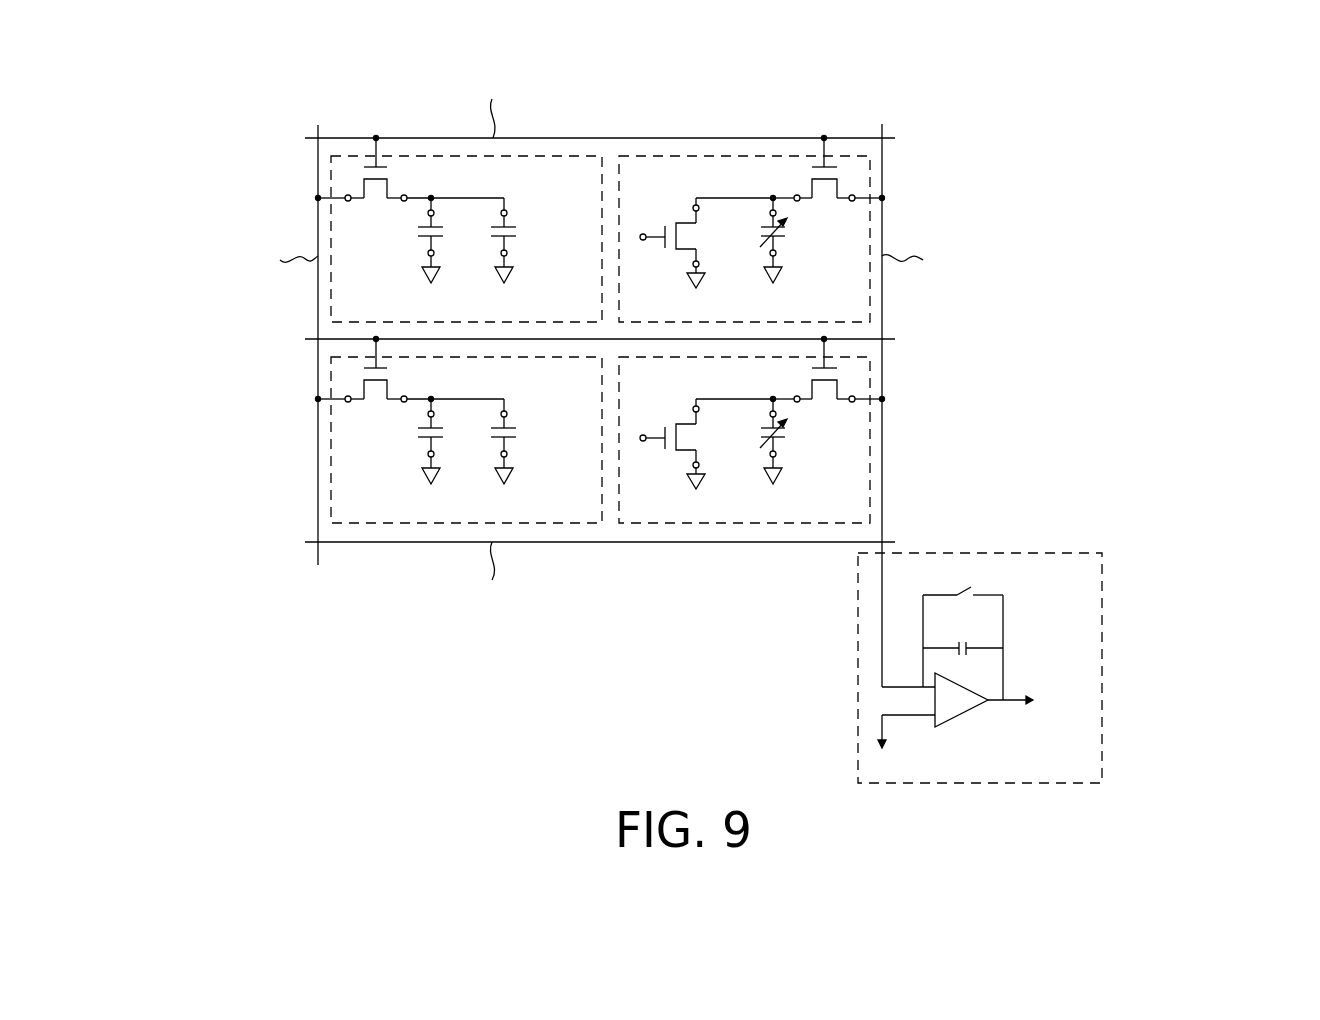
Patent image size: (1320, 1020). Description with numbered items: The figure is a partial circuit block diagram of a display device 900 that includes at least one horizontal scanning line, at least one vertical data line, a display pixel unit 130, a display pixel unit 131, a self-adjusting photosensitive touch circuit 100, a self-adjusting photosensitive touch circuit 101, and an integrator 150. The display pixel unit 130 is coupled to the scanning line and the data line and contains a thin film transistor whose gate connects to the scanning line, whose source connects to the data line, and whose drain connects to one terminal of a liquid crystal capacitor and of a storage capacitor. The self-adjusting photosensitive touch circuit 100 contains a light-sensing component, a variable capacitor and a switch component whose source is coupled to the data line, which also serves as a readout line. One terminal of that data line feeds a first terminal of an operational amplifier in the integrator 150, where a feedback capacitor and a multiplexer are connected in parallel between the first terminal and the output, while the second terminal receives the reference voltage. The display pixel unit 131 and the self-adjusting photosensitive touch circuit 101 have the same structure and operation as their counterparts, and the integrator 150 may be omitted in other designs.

The self-adjusting photosensitive touch circuit 100 is at (727, 153).
The self-adjusting photosensitive touch circuit 101 is at (870, 439).
The display pixel unit 130 is at (332, 176).
The display pixel unit 131 is at (332, 439).
The integrator 150 is at (1102, 608).
The display device 900 is at (699, 419).